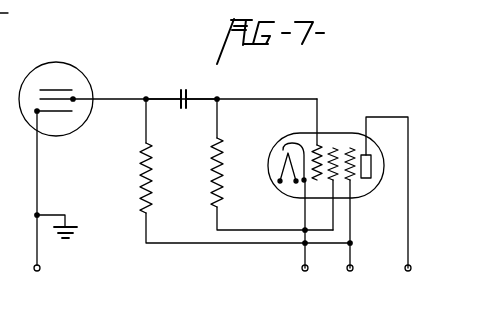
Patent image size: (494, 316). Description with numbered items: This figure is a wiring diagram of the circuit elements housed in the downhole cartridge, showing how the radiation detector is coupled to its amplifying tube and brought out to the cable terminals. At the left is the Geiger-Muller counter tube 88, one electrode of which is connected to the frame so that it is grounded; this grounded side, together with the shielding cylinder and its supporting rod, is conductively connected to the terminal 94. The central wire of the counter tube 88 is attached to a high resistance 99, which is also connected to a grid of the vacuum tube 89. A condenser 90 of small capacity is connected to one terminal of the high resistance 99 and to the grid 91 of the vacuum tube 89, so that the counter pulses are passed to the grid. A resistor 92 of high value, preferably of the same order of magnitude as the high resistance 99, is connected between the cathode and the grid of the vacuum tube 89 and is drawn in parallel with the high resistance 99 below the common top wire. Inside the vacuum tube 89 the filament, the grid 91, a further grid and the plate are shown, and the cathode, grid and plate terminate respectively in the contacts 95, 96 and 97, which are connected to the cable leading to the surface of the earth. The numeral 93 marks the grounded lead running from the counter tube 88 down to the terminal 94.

The Geiger-Muller counter tube 88 is at (81, 67).
The vacuum tube 89 is at (326, 144).
The condenser 90 is at (191, 82).
The grid 91 is at (313, 147).
The resistor 92 is at (210, 185).
The cathode lead 93 is at (38, 187).
The terminal 94 is at (43, 267).
The contact 95 is at (298, 256).
The contact 96 is at (344, 256).
The contact 97 is at (413, 265).
The high resistance 99 is at (136, 168).